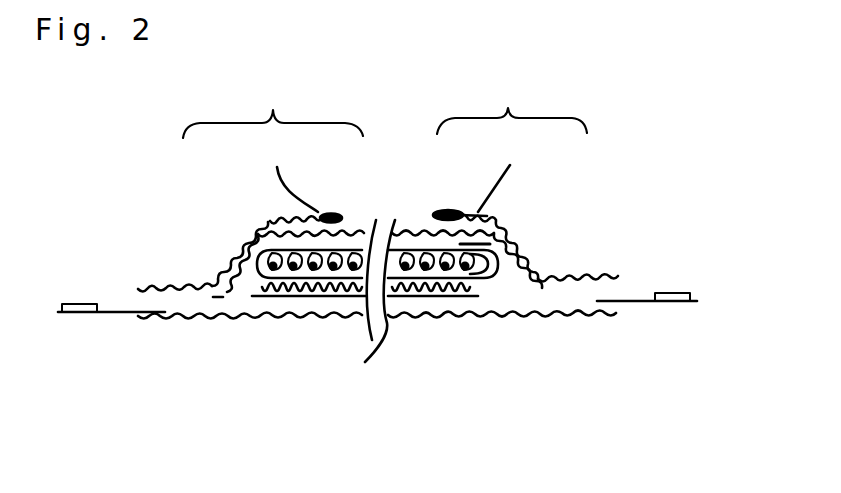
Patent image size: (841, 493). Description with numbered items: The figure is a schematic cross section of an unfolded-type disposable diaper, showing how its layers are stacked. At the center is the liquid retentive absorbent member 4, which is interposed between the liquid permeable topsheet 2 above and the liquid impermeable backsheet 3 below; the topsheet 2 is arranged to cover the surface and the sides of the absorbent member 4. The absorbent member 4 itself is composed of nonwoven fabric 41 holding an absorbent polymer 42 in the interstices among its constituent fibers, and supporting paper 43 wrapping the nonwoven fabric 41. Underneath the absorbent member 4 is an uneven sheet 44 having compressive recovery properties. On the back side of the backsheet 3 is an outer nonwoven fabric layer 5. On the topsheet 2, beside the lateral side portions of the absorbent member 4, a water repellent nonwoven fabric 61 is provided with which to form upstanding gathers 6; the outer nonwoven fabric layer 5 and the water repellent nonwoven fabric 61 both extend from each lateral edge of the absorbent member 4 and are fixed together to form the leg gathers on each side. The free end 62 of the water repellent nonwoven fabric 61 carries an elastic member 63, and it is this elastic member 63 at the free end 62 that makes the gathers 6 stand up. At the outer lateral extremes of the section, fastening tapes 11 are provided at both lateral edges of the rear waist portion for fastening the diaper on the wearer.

The liquid permeable topsheet 2 is at (408, 233).
The liquid impermeable backsheet 3 is at (260, 320).
The liquid retentive absorbent member 4 is at (442, 390).
The outer nonwoven fabric layer 5 is at (199, 320).
The upstanding gathers 6 is at (385, 105).
The fastening tapes 11 is at (115, 312).
The nonwoven fabric 41 is at (305, 296).
The absorbent polymer 42 is at (360, 296).
The supporting paper 43 is at (428, 297).
The uneven sheet 44 is at (459, 296).
The water repellent nonwoven fabric 61 is at (253, 233).
The free end 62 is at (333, 210).
The elastic member 63 is at (394, 168).